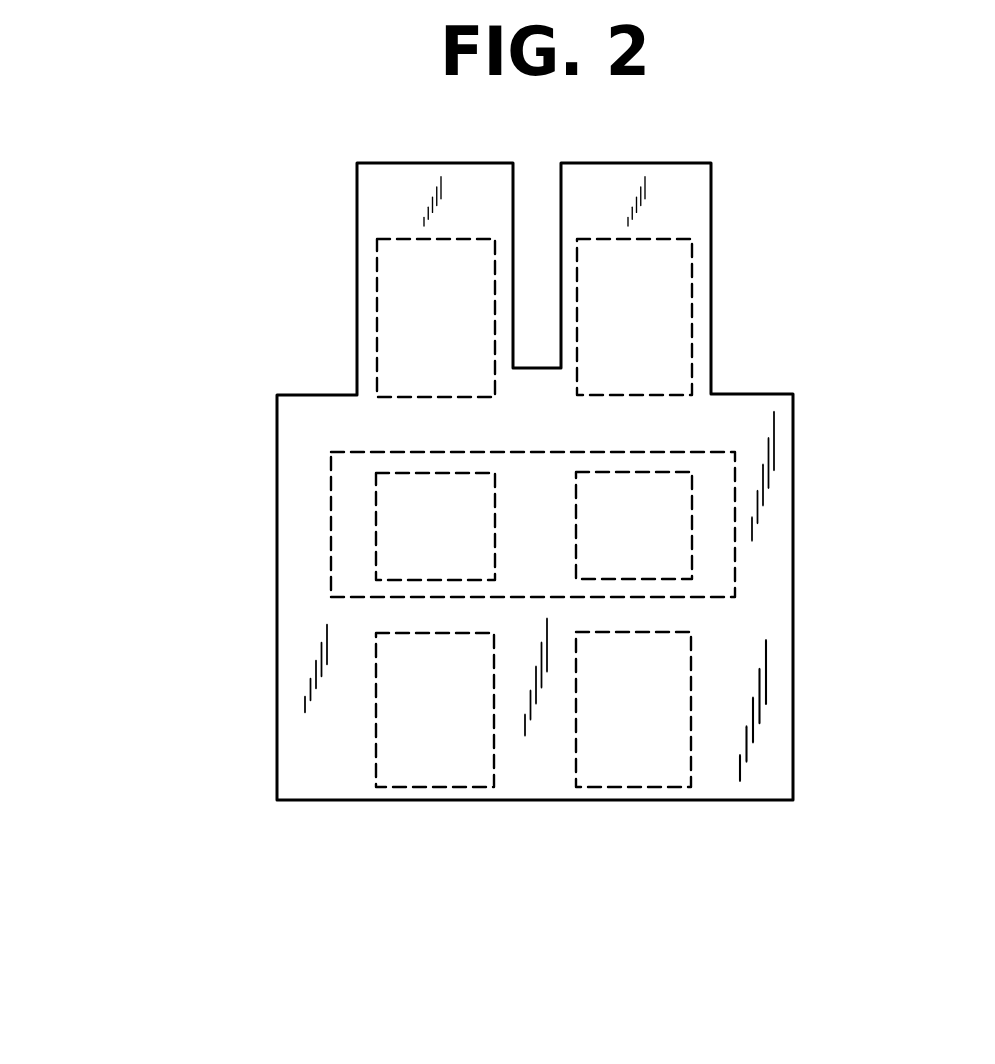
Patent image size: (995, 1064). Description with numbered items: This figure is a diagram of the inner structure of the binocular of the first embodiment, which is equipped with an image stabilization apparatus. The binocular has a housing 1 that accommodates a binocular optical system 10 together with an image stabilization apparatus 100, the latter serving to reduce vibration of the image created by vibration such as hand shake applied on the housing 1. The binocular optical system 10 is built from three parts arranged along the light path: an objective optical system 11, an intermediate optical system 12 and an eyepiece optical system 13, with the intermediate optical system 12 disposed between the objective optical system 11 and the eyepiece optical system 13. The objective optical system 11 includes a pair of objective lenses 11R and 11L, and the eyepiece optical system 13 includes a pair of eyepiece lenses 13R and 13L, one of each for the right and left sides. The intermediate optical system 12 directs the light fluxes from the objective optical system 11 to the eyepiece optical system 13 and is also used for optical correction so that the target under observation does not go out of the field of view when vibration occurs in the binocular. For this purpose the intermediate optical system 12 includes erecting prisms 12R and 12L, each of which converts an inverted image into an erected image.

The housing 1 is at (793, 656).
The image stabilization apparatus 100 is at (720, 513).
The binocular optical system 10 is at (90, 325).
The objective optical system 11 is at (162, 757).
The objective lens 11R is at (396, 716).
The objective lens 11L is at (610, 752).
The intermediate optical system 12 is at (159, 555).
The erecting prism 12R is at (402, 514).
The erecting prism 12L is at (596, 543).
The eyepiece optical system 13 is at (158, 347).
The eyepiece lens 13R is at (402, 279).
The eyepiece lens 13L is at (606, 367).